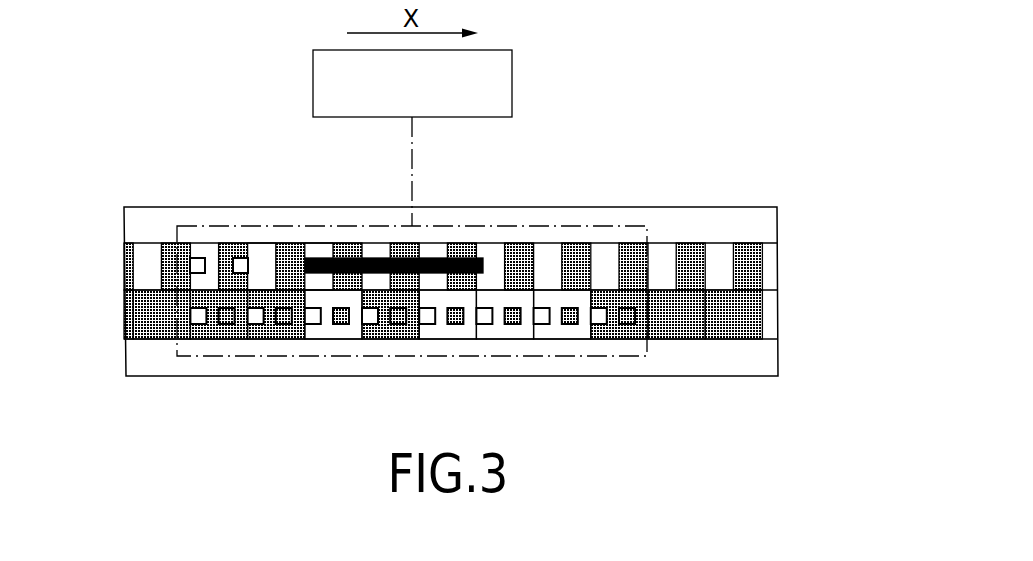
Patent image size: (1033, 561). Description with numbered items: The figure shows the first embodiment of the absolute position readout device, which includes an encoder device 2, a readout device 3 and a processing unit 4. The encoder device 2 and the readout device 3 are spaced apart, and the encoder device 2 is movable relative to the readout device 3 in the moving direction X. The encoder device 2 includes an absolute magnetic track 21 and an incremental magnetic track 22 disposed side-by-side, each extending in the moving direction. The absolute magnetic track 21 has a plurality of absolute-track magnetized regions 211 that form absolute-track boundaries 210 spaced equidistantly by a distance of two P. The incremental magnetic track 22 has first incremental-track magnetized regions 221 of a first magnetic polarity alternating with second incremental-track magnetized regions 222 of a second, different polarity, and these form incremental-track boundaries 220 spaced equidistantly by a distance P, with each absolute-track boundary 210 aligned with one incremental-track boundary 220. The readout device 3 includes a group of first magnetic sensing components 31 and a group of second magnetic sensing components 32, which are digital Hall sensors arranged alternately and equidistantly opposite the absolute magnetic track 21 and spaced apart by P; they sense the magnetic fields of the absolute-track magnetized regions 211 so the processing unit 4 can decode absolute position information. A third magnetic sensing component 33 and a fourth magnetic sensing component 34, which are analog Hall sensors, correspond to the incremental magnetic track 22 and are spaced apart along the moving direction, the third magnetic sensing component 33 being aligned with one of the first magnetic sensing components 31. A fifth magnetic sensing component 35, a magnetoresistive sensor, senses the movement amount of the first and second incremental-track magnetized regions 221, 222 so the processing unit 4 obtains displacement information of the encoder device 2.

The encoder device 2 is at (147, 207).
The readout device 3 is at (623, 226).
The processing unit 4 is at (505, 58).
The absolute magnetic track 21 is at (790, 321).
The incremental magnetic track 22 is at (790, 262).
The first magnetic sensing components 31 is at (253, 325).
The second magnetic sensing components 32 is at (393, 325).
The third magnetic sensing component 33 is at (200, 262).
The fourth magnetic sensing component 34 is at (240, 260).
The fifth magnetic sensing component 35 is at (432, 258).
The absolute-track boundaries 210 is at (757, 318).
The absolute-track magnetized regions 211 is at (145, 318).
The incremental-track boundaries 220 is at (127, 273).
The first incremental-track magnetized regions 221 is at (322, 248).
The second incremental-track magnetized regions 222 is at (400, 245).